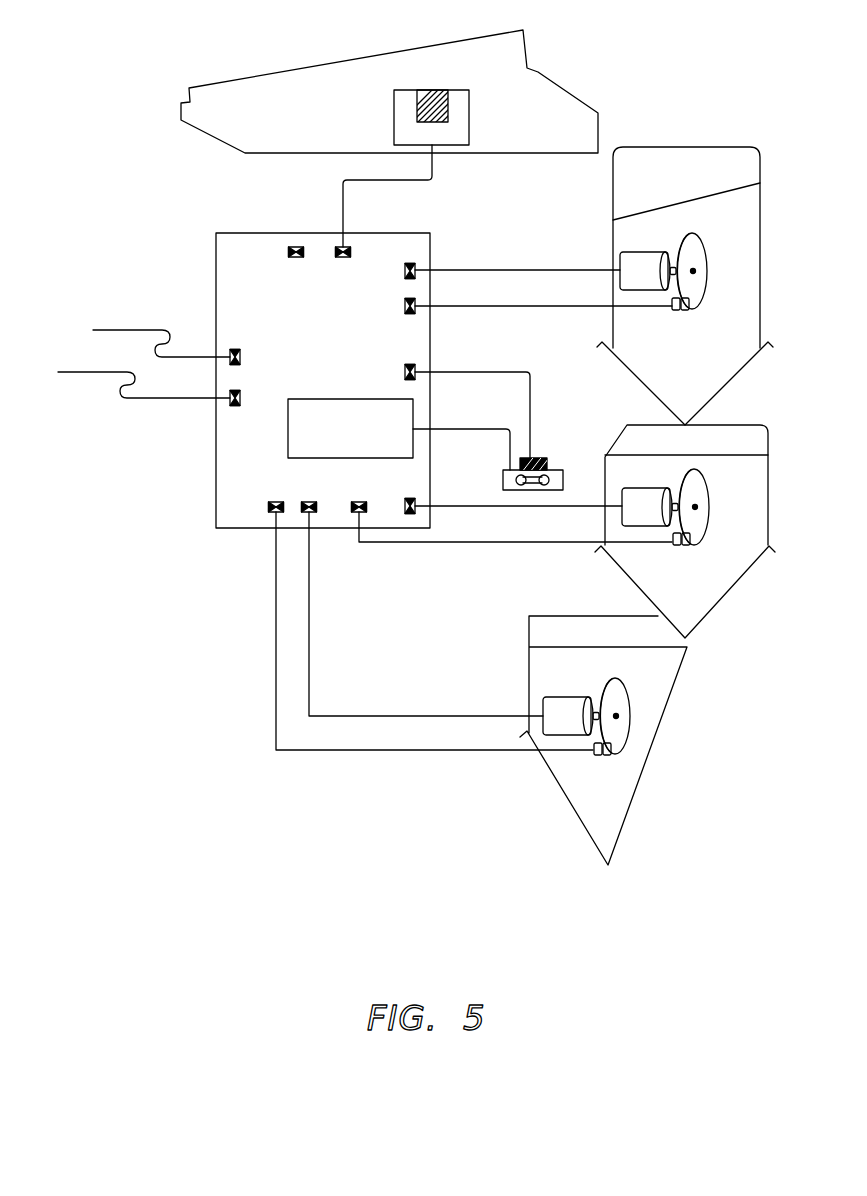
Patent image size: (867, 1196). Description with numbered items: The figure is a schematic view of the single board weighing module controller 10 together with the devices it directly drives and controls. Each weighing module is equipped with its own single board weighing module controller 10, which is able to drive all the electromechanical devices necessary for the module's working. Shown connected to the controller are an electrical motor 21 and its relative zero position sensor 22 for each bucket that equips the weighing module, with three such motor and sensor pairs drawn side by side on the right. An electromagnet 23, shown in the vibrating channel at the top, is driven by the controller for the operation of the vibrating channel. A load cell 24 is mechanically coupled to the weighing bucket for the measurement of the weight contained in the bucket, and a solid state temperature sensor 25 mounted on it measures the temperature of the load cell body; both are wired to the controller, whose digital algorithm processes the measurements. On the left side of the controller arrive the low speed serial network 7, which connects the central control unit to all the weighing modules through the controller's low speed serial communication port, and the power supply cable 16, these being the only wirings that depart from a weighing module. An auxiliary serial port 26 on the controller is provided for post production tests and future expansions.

The single board weighing module controller 10 is at (215, 287).
The low speed serial network 7 is at (117, 330).
The power supply cable 16 is at (187, 398).
The electrical motor 21 is at (625, 257).
The zero position sensor 22 is at (687, 303).
The electromagnet 23 is at (394, 118).
The load cell 24 is at (505, 470).
The solid state temperature sensor 25 is at (542, 460).
The auxiliary serial port 26 is at (291, 248).